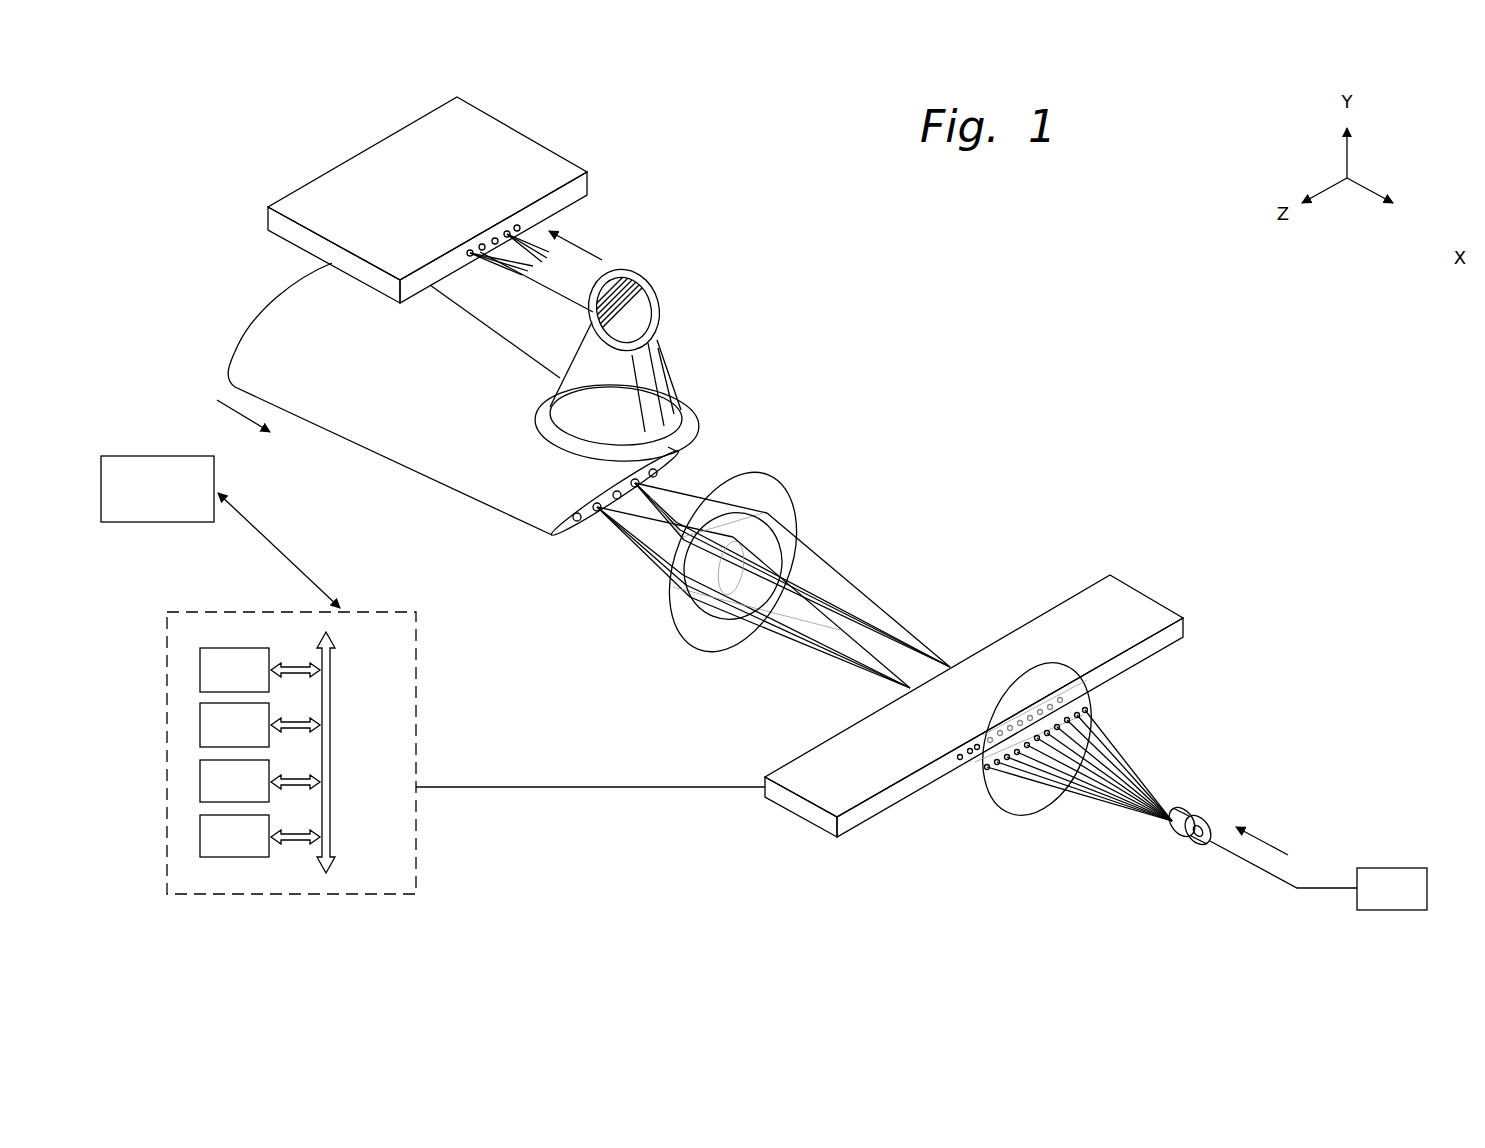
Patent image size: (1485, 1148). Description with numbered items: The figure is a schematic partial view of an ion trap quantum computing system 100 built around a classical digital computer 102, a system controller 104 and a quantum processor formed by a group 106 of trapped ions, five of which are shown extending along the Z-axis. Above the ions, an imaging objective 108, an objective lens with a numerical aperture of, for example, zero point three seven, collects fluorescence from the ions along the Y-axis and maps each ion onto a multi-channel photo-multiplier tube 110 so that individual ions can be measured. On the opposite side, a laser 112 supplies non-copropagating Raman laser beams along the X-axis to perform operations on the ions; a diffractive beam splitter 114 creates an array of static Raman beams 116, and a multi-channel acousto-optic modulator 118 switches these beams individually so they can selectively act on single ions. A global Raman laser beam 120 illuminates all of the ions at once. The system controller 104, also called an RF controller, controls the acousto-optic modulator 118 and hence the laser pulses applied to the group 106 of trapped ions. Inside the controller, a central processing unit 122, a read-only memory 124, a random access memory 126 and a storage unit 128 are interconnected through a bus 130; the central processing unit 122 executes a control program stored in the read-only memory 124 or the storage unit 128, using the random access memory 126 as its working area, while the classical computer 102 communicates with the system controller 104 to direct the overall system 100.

The ion trap quantum computing system 100 is at (932, 391).
The classical computer 102 is at (144, 503).
The system controller 104 is at (251, 611).
The group of trapped ions 106 is at (596, 543).
The imaging objective 108 is at (663, 358).
The multi-channel photo-multiplier tube 110 is at (520, 131).
The laser 112 is at (1378, 904).
The diffractive beam splitter 114 is at (1188, 808).
The static Raman beams 116 is at (687, 648).
The multi-channel acousto-optic modulator 118 is at (1147, 593).
The global Raman laser beam 120 is at (396, 491).
The central processing unit 122 is at (220, 684).
The read-only memory 124 is at (220, 739).
The random access memory 126 is at (220, 795).
The storage unit 128 is at (220, 850).
The bus 130 is at (333, 756).